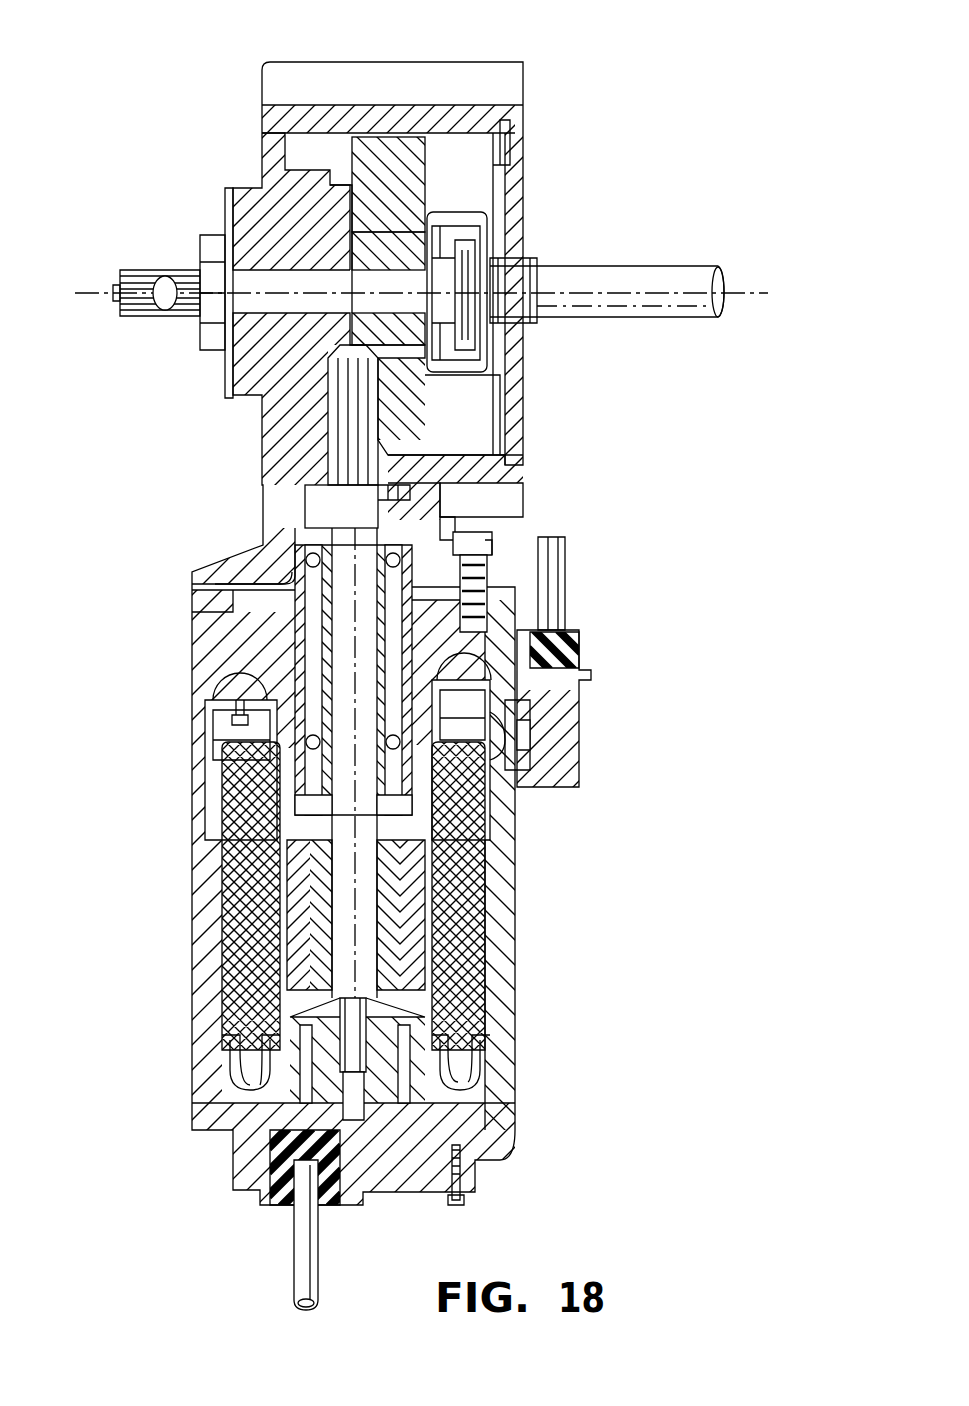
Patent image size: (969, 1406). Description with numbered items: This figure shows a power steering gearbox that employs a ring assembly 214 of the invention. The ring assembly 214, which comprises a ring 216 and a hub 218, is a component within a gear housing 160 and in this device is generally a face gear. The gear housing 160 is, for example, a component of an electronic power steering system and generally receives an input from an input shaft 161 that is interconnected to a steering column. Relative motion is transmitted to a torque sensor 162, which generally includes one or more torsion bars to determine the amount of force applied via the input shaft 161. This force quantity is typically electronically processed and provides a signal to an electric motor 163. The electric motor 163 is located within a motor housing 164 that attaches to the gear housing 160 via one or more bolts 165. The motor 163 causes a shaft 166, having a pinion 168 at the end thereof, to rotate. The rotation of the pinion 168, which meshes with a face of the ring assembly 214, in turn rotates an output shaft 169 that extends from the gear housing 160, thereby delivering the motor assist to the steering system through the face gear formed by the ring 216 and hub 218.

The gear housing 160 is at (480, 62).
The input shaft 161 is at (660, 268).
The torque sensor 162 is at (472, 370).
The electric motor 163 is at (485, 755).
The motor housing 164 is at (517, 1015).
The bolt 165 is at (485, 532).
The shaft 166 is at (380, 890).
The pinion 168 is at (335, 430).
The output shaft 169 is at (158, 272).
The ring assembly 214 is at (358, 248).
The ring 216 is at (420, 163).
The hub 218 is at (418, 243).